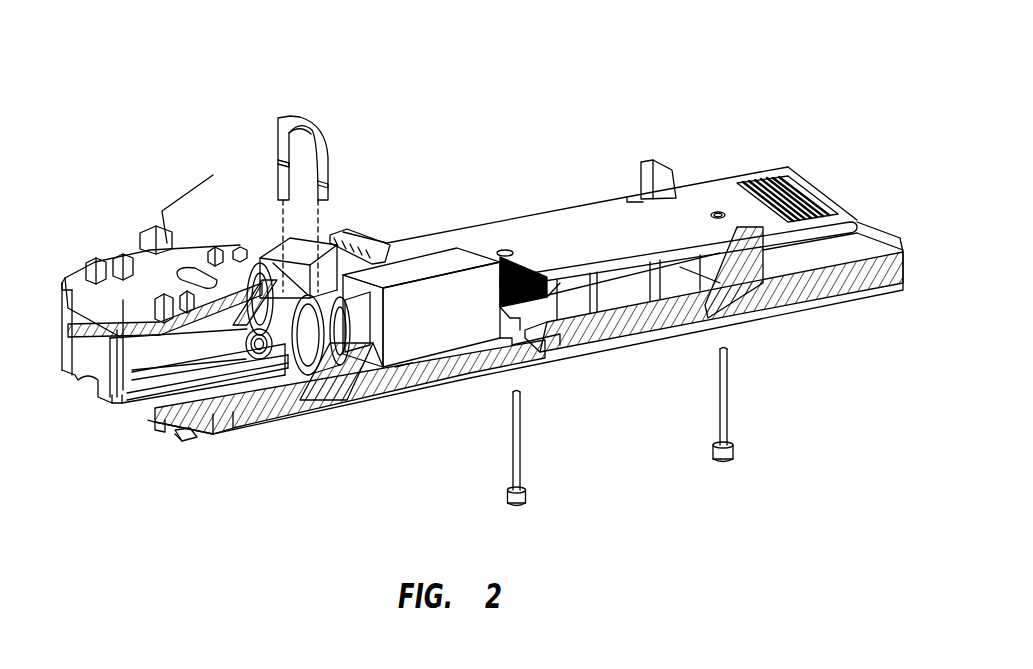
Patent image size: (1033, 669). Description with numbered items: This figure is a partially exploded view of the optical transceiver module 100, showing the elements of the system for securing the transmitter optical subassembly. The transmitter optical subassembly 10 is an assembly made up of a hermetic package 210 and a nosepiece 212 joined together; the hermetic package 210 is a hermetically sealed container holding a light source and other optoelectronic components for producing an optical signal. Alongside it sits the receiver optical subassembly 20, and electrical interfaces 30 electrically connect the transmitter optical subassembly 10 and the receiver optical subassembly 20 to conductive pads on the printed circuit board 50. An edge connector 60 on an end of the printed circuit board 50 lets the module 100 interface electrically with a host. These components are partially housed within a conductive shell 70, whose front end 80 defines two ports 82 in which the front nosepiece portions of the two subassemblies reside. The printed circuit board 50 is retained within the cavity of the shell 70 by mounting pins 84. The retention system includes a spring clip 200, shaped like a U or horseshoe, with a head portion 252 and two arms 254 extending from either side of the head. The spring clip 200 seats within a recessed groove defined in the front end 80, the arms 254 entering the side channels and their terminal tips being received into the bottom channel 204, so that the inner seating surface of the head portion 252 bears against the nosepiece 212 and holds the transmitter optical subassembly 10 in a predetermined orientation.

The optical transceiver module 100 is at (510, 124).
The transmitter optical subassembly 10 is at (403, 350).
The receiver optical subassembly 20 is at (306, 231).
The electrical interfaces 30 is at (508, 328).
The printed circuit board 50 is at (577, 148).
The edge connector 60 is at (750, 150).
The shell 70 is at (825, 324).
The front end 80 is at (207, 412).
The ports 82 is at (95, 340).
The mounting pins 84 is at (517, 468).
The spring clip 200 is at (262, 133).
The bottom channel 204 is at (323, 382).
The hermetic package 210 is at (464, 328).
The nosepiece 212 is at (334, 286).
The head portion 252 is at (300, 118).
The arms 254 is at (313, 190).